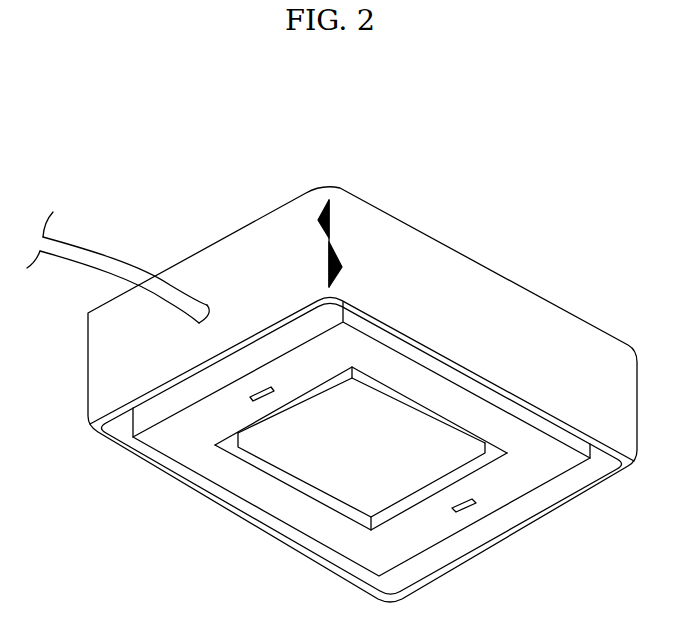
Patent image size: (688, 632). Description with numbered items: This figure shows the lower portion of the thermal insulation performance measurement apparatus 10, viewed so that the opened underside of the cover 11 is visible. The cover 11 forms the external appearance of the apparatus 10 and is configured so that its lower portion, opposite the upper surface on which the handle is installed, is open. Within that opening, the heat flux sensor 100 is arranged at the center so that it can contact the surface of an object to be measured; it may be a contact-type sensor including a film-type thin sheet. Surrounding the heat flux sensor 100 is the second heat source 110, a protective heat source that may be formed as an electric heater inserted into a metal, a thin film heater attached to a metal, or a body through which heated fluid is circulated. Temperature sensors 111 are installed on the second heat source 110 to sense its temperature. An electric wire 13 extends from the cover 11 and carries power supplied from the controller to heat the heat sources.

The thermal insulation performance measurement apparatus 10 is at (637, 144).
The cover 11 is at (517, 300).
The electric wire 13 is at (80, 255).
The heat flux sensor 100 is at (337, 468).
The second heat source 110 is at (197, 466).
The temperature sensors 111 is at (250, 396).